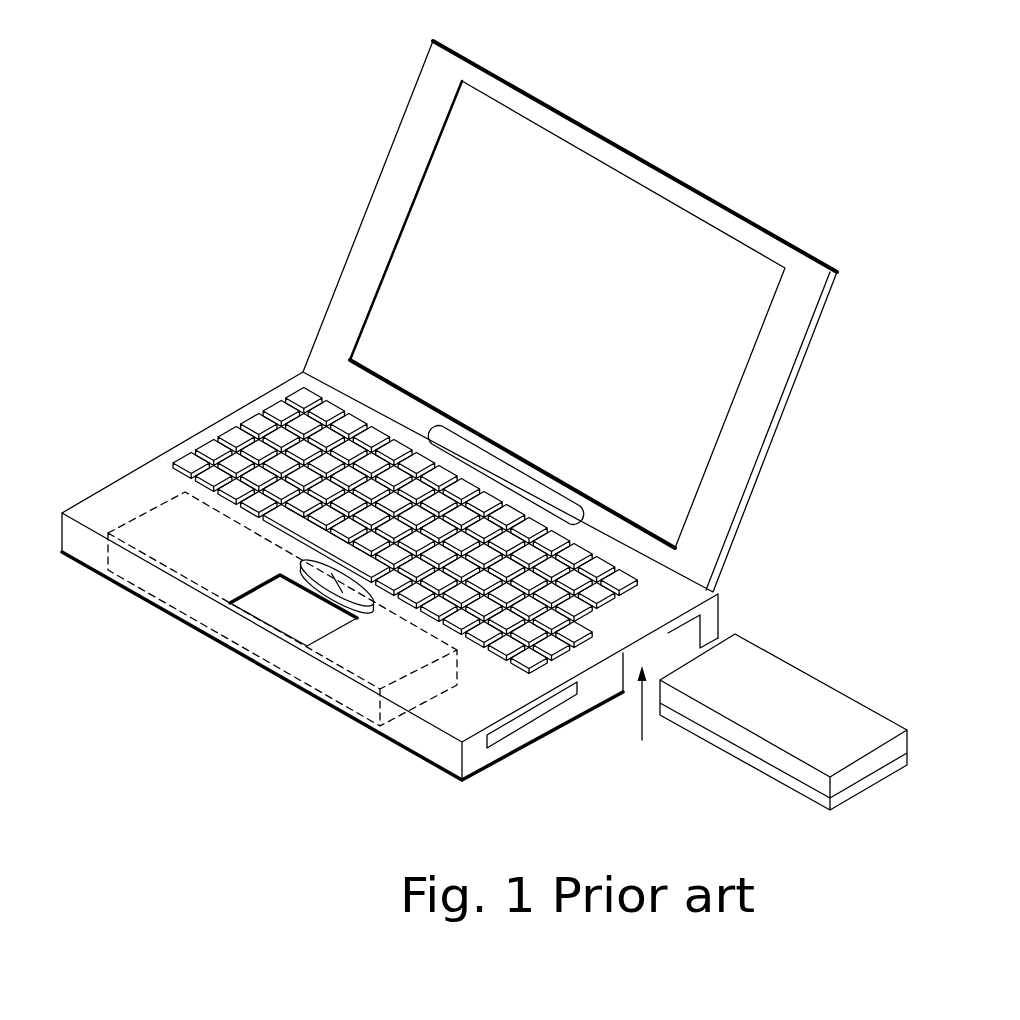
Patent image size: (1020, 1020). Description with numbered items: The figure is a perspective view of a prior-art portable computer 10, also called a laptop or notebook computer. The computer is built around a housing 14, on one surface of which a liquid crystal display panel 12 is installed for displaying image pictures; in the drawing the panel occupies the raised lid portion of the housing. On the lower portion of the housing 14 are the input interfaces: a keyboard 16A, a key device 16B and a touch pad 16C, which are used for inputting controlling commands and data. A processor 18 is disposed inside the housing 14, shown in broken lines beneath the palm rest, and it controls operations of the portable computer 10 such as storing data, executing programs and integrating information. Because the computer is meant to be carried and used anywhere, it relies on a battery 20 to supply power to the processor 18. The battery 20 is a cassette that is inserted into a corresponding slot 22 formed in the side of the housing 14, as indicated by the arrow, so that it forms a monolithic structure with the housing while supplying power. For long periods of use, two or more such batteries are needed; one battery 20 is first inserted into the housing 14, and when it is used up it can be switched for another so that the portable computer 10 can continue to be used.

The portable computer 10 is at (910, 163).
The liquid crystal display panel 12 is at (735, 285).
The housing 14 is at (735, 443).
The keyboard 16A is at (217, 448).
The key device 16B is at (356, 588).
The touch pad 16C is at (275, 605).
The processor 18 is at (163, 520).
The battery 20 is at (837, 717).
The slot 22 is at (642, 740).